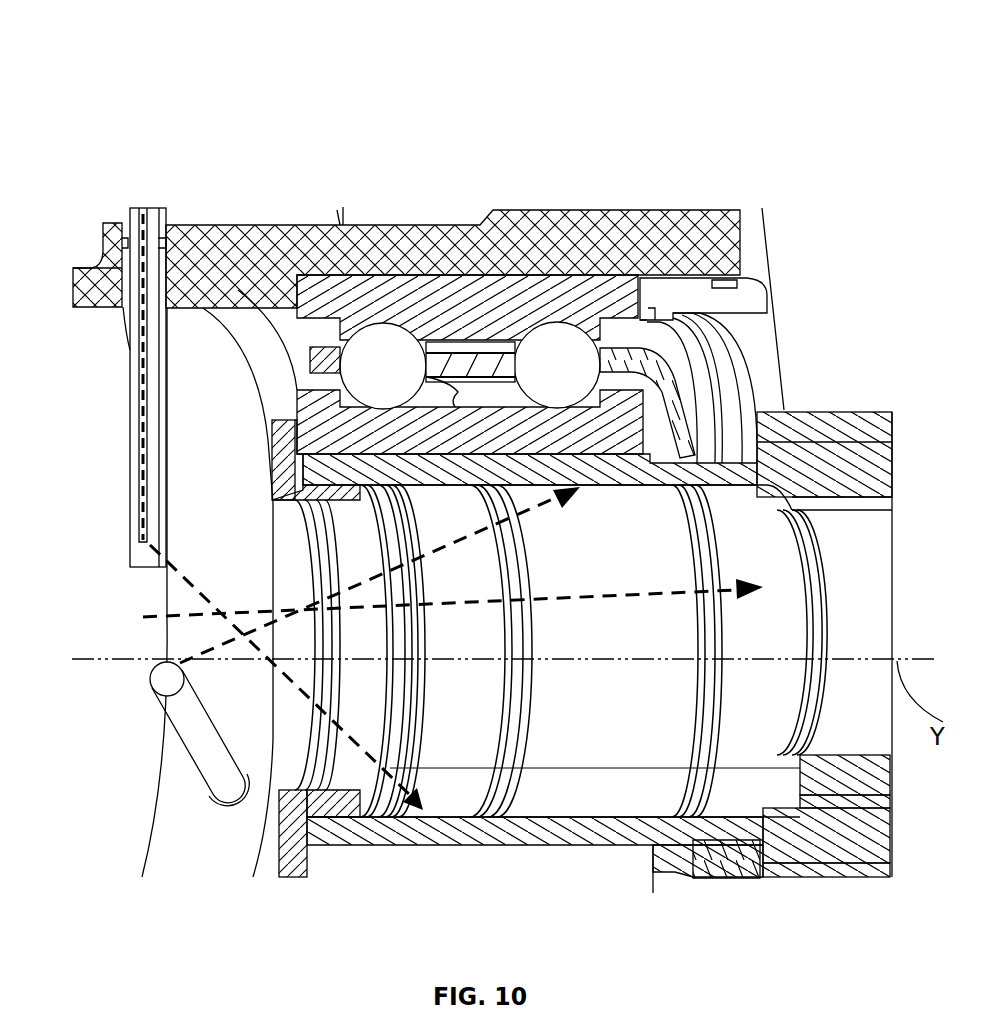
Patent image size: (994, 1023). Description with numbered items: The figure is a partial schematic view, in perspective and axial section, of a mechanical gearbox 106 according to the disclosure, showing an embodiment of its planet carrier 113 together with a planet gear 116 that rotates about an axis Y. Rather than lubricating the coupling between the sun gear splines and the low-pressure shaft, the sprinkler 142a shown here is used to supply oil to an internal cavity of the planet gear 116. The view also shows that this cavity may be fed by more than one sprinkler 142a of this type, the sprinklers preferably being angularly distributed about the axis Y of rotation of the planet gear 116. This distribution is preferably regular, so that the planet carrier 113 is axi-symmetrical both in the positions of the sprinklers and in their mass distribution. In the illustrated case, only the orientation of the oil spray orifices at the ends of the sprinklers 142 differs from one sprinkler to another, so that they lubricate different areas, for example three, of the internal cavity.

The gearbox 106 is at (800, 68).
The planet carrier 113 is at (255, 258).
The planet gear 116 is at (870, 452).
The sprinklers 142 is at (130, 466).
The sprinkler 142a is at (200, 768).